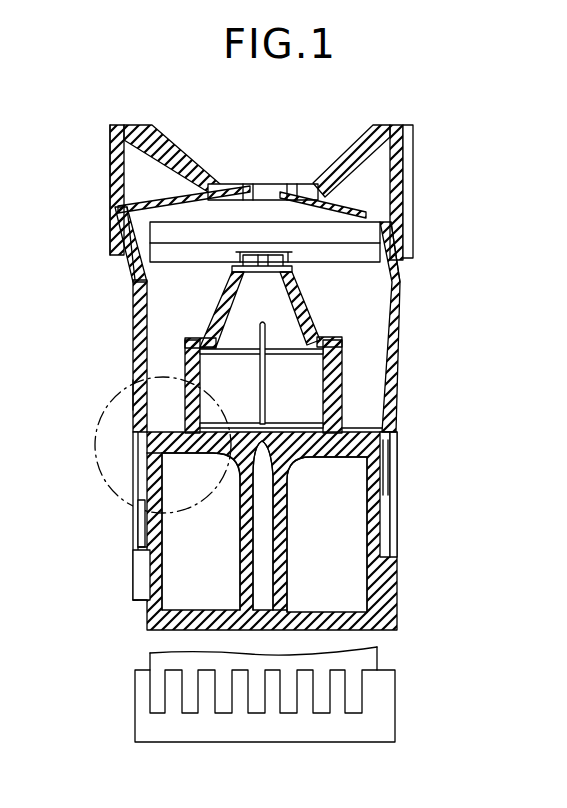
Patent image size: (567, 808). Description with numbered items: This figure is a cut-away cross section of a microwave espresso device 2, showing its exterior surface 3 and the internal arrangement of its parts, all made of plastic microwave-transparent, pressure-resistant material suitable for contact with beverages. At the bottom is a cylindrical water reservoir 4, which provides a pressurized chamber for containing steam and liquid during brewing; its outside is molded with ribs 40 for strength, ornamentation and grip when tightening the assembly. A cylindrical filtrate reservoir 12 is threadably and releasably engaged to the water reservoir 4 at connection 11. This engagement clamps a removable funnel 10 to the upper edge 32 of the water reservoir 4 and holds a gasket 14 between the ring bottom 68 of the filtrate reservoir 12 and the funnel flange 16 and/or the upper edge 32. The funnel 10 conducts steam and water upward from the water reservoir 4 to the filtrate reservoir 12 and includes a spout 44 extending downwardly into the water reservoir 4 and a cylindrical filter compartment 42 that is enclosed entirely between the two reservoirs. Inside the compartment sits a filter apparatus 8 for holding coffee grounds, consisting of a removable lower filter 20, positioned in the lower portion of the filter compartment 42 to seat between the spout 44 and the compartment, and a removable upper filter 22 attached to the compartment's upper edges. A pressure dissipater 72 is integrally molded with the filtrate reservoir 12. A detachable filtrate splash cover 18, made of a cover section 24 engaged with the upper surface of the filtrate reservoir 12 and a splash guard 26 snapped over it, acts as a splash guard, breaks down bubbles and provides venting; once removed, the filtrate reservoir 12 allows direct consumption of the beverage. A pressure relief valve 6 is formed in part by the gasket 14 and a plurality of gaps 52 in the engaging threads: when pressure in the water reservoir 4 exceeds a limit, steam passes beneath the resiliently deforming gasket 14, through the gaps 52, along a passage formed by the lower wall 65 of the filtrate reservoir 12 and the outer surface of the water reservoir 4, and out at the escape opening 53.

The microwave espresso device 2 is at (412, 318).
The exterior surface 3 is at (384, 661).
The water reservoir 4 is at (338, 570).
The pressure relief valve 6 is at (118, 393).
The filter apparatus 8 is at (305, 420).
The funnel 10 is at (289, 478).
The connection 11 is at (133, 472).
The filtrate reservoir 12 is at (352, 298).
The gasket 14 is at (384, 424).
The funnel flange 16 is at (180, 462).
The filtrate splash cover 18 is at (414, 192).
The lower filter 20 is at (267, 438).
The upper filter 22 is at (245, 343).
The cover section 24 is at (218, 198).
The splash guard 26 is at (414, 152).
The upper edge 32 is at (372, 462).
The ribs 40 is at (130, 603).
The filter compartment 42 is at (300, 383).
The spout 44 is at (292, 587).
The gaps 52 is at (130, 557).
The escape opening 53 is at (123, 590).
The lower wall 65 is at (128, 527).
The ring bottom 68 is at (102, 410).
The pressure dissipater 72 is at (240, 252).